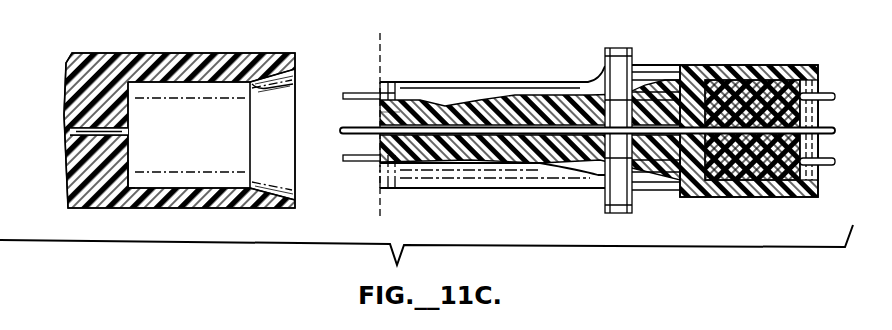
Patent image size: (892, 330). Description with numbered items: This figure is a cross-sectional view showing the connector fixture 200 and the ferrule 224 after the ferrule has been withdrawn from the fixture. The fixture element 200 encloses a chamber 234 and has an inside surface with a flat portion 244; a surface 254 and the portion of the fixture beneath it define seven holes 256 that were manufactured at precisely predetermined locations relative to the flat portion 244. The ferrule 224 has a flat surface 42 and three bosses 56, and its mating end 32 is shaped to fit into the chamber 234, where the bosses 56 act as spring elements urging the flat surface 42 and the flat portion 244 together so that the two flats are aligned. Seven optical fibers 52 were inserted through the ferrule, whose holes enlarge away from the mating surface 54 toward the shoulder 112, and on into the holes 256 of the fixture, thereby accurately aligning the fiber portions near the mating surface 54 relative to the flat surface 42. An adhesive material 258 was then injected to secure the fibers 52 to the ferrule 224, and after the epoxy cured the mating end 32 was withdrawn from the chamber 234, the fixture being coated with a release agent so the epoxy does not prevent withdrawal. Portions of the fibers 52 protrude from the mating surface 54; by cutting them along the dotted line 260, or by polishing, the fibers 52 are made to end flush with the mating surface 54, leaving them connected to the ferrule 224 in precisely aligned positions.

The connector fixture 200 is at (166, 54).
The chamber 234 is at (215, 128).
The flat portion 244 is at (272, 87).
The surface 254 is at (131, 165).
The holes 256 is at (73, 131).
The dotted line 260 is at (383, 116).
The mating end 32 is at (522, 72).
The flat surface 42 is at (414, 82).
The bosses 56 is at (535, 192).
The shoulder 112 is at (624, 48).
The ferrule 224 is at (780, 50).
The optical fibers 52 is at (368, 92).
The adhesive material 258 is at (820, 125).
The mating surface 54 is at (380, 113).